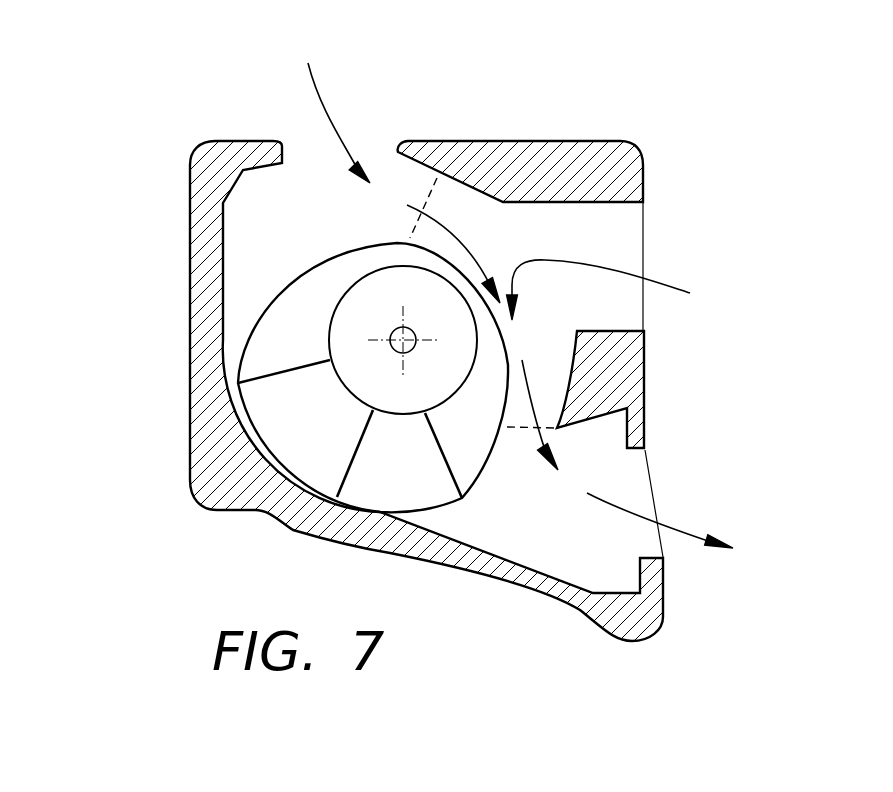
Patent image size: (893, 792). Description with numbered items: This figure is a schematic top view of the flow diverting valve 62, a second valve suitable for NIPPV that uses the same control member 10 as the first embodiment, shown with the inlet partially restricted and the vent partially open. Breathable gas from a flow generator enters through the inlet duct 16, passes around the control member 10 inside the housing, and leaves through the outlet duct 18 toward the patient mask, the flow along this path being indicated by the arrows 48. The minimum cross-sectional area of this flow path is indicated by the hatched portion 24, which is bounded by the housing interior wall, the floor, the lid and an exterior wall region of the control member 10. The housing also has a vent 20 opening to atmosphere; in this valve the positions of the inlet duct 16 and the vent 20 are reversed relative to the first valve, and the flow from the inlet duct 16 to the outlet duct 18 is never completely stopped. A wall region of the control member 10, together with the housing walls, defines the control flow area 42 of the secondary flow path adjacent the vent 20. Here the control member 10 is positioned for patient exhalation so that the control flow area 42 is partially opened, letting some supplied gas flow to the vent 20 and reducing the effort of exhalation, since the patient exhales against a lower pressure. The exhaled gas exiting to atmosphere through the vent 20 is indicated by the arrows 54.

The control member 10 is at (291, 258).
The inlet duct 16 is at (633, 318).
The outlet duct 18 is at (385, 155).
The vent 20 is at (657, 548).
The rectangular hatched portion 24 is at (410, 232).
The control flow area 42 is at (512, 432).
The arrows 48 is at (548, 260).
The arrows 54 is at (622, 512).
The flow diverting valve 62 is at (137, 529).